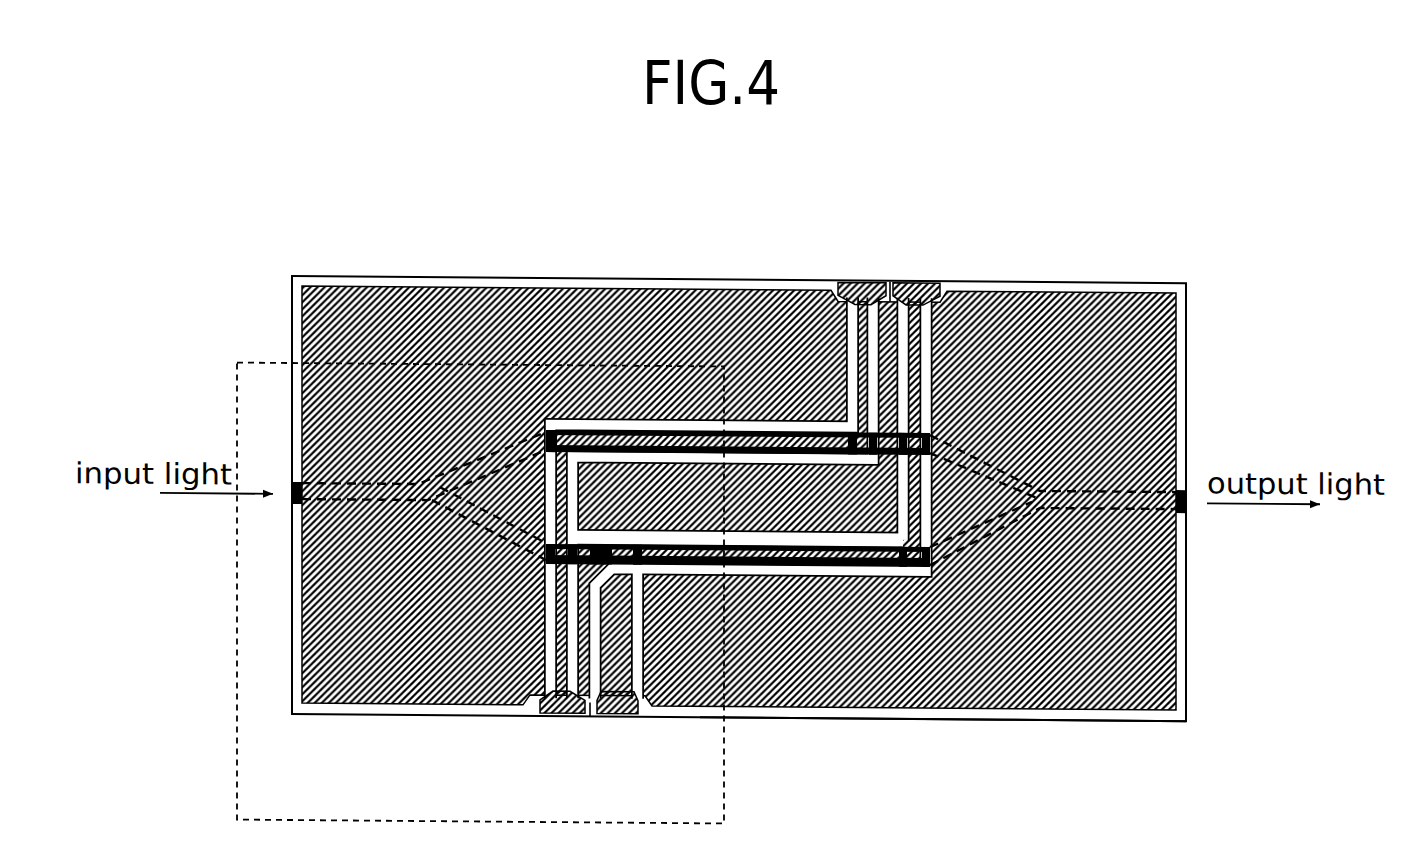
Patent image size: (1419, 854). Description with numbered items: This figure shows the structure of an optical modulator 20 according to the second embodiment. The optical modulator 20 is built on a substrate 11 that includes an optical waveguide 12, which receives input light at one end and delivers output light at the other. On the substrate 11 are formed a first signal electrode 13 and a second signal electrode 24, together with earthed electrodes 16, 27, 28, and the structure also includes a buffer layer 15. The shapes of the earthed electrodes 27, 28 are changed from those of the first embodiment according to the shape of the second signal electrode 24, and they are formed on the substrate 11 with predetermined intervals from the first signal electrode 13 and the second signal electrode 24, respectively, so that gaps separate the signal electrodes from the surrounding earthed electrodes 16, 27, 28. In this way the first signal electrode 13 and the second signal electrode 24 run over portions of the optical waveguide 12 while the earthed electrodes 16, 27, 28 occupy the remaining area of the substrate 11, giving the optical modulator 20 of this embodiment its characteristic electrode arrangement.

The optical modulator 20 is at (1178, 266).
The substrate 11 is at (400, 275).
The optical waveguide 12 is at (293, 500).
The first signal electrode 13 is at (857, 272).
The second signal electrode 24 is at (923, 273).
The earthed electrode 16 is at (380, 702).
The earthed electrode 27 is at (588, 711).
The earthed electrode 28 is at (858, 703).
The buffer layer 15 is at (1070, 711).